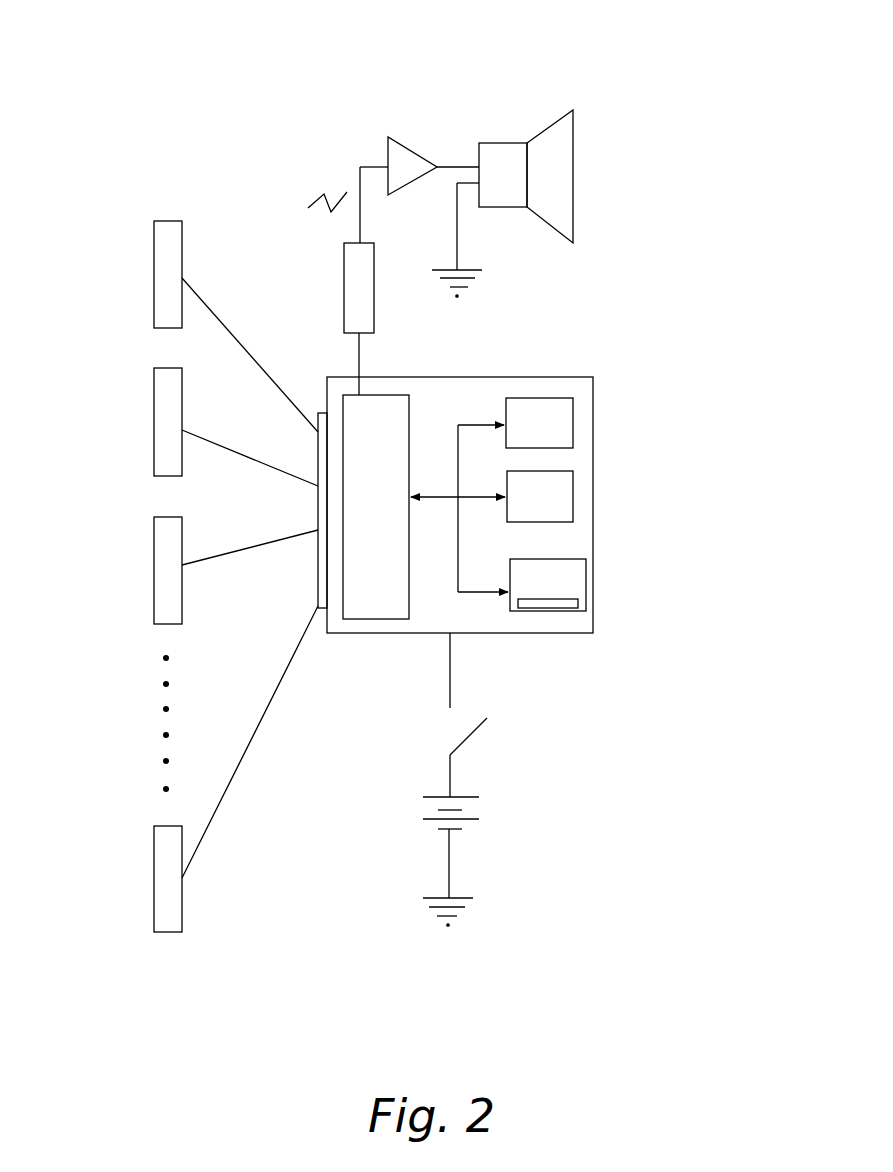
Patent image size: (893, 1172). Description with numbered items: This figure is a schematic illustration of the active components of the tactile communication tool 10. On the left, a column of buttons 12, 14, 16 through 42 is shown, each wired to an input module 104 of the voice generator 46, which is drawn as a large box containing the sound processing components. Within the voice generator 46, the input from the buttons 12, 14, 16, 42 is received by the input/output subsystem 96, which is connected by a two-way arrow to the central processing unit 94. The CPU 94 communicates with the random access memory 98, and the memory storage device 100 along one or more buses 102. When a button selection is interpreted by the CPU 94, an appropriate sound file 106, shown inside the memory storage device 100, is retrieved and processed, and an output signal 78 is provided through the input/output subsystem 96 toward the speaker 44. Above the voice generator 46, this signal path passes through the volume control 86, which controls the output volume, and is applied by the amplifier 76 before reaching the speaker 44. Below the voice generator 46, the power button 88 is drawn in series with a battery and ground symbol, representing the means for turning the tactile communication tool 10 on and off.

The tactile communication tool 10 is at (650, 313).
The button 12 is at (155, 278).
The button 14 is at (155, 423).
The button 16 is at (156, 570).
The button 42 is at (157, 878).
The speaker 44 is at (502, 144).
The voice generator 46 is at (637, 483).
The amplifier 76 is at (408, 148).
The output signal 78 is at (328, 190).
The volume control 86 is at (344, 260).
The power button 88 is at (477, 731).
The central processing unit 94 is at (573, 488).
The input/output subsystem 96 is at (350, 402).
The random access memory 98 is at (573, 413).
The memory storage device 100 is at (586, 580).
The bus 102 is at (460, 432).
The input module 104 is at (317, 563).
The sound file 106 is at (532, 609).